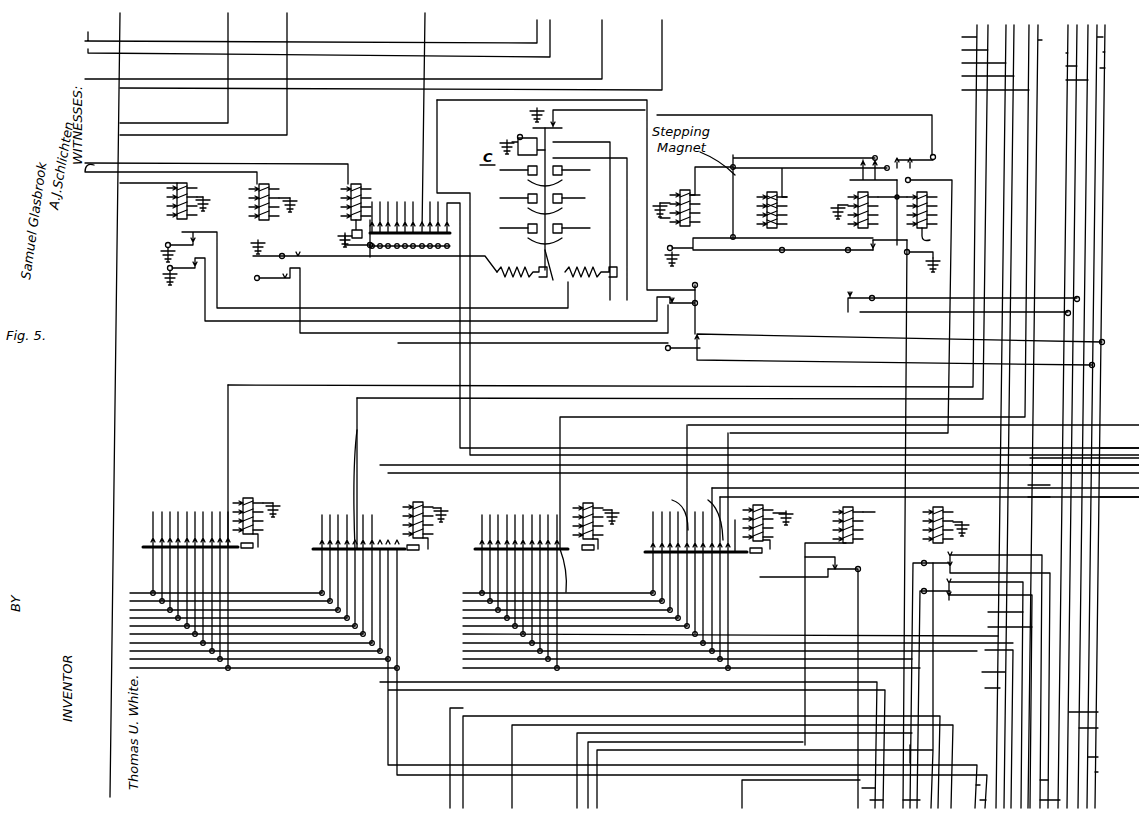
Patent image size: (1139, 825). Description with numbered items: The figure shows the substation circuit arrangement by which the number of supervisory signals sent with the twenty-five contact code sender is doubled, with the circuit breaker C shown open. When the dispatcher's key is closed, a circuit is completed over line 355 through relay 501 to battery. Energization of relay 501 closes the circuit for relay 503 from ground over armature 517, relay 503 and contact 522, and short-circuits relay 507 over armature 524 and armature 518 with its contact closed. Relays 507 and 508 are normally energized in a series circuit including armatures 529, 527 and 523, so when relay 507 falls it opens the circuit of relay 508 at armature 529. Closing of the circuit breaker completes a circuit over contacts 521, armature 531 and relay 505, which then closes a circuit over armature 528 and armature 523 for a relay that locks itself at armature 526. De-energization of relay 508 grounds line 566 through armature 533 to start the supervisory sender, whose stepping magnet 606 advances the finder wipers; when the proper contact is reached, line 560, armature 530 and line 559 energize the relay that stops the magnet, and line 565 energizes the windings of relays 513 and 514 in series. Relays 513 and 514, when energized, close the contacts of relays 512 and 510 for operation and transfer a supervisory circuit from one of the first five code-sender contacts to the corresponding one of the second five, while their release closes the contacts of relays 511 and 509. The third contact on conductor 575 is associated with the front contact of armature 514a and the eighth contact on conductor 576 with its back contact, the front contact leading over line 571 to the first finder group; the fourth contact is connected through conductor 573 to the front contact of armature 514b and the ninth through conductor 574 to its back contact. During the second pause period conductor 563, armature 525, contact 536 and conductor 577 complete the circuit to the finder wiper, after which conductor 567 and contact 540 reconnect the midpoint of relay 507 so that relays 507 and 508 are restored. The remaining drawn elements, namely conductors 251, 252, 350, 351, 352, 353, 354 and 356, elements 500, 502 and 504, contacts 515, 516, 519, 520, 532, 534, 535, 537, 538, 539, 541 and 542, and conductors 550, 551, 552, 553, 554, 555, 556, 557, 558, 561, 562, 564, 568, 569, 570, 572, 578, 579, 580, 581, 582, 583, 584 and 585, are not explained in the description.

The conductor 251 is at (334, 45).
The conductor 252 is at (311, 30).
The conductor 350 is at (361, 49).
The conductor 351 is at (408, 63).
The conductor 352 is at (174, 68).
The conductor 353 is at (186, 85).
The conductor 354 is at (216, 163).
The line 355 is at (170, 183).
The conductor 356 is at (148, 192).
The relay 500 is at (170, 207).
The relay 501 is at (251, 207).
The relay 502 is at (343, 207).
The relay 503 is at (527, 223).
The switch spring 504 is at (590, 221).
The relay 505 is at (693, 196).
The relay 507 is at (852, 194).
The relay 508 is at (919, 221).
The relay 509 is at (257, 500).
The relay 510 is at (427, 505).
The relay 511 is at (607, 499).
The relay 512 is at (789, 541).
The relay 513 is at (849, 626).
The relay 514 is at (930, 536).
The armature 514a is at (979, 675).
The armature 514b is at (974, 693).
The contact 515 is at (359, 266).
The contact 516 is at (416, 289).
The armature 517 is at (374, 253).
The armature 518 is at (446, 298).
The wiper contacts 519 is at (423, 248).
The contact bank 520 is at (437, 215).
The contacts 521 is at (556, 130).
The contact 522 is at (533, 132).
The armature 523 is at (781, 248).
The armature 524 is at (690, 308).
The armature 525 is at (751, 352).
The armature 526 is at (770, 178).
The armature 527 is at (780, 258).
The armature 528 is at (871, 158).
The armature 529 is at (842, 261).
The armature 530 is at (853, 307).
The armature 531 is at (915, 152).
The contact 532 is at (938, 177).
The armature 533 is at (924, 524).
The contact bank 534 is at (263, 591).
The conductor 535 is at (338, 489).
The contact 536 is at (650, 661).
The wiper 537 is at (574, 573).
The contact bank 538 is at (738, 592).
The conductor 539 is at (671, 507).
The contact 540 is at (706, 511).
The contact bank 541 is at (707, 547).
The contact 542 is at (846, 677).
The conductor 550 is at (130, 405).
The conductor 551 is at (424, 28).
The conductor 552 is at (602, 206).
The conductor 553 is at (672, 212).
The conductor 554 is at (705, 416).
The conductor 555 is at (738, 416).
The conductor 556 is at (770, 416).
The conductor 557 is at (1048, 416).
The conductor 558 is at (1057, 416).
The line 559 is at (909, 416).
The line 560 is at (1085, 416).
The conductor 561 is at (1104, 416).
The conductor 562 is at (1109, 416).
The conductor 563 is at (1112, 420).
The conductor 564 is at (723, 770).
The line 565 is at (695, 775).
The line 566 is at (765, 685).
The conductor 567 is at (847, 787).
The conductor 568 is at (861, 799).
The conductor 569 is at (967, 784).
The conductor 570 is at (970, 799).
The line 571 is at (983, 724).
The conductor 572 is at (979, 670).
The conductor 573 is at (988, 610).
The conductor 574 is at (992, 626).
The conductor 575 is at (1054, 779).
The conductor 576 is at (1054, 799).
The conductor 577 is at (918, 754).
The conductor 578 is at (906, 799).
The conductor 579 is at (977, 687).
The conductor 580 is at (1037, 458).
The conductor 581 is at (1063, 465).
The conductor 582 is at (1119, 446).
The conductor 583 is at (1119, 507).
The conductor 584 is at (1032, 503).
The conductor 585 is at (1005, 597).
The stepping magnet 606 is at (786, 210).